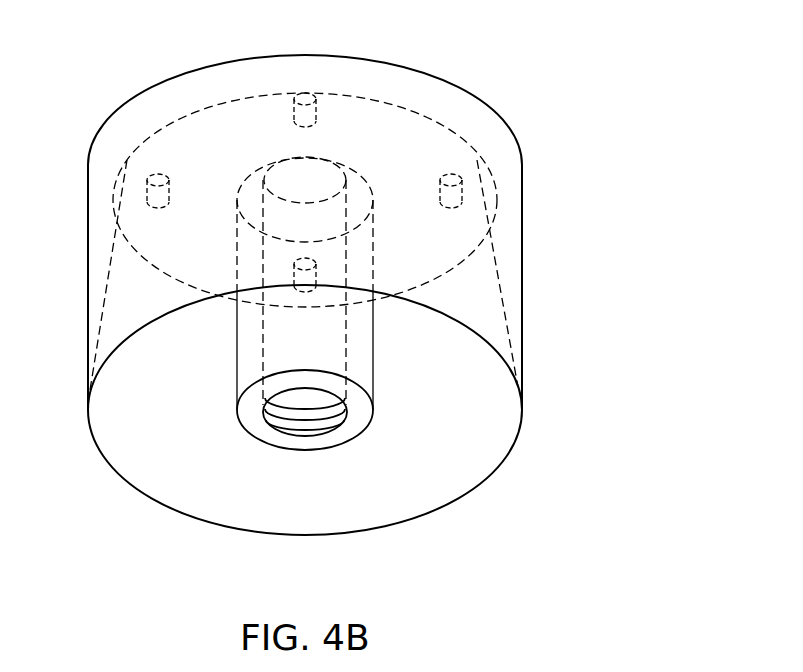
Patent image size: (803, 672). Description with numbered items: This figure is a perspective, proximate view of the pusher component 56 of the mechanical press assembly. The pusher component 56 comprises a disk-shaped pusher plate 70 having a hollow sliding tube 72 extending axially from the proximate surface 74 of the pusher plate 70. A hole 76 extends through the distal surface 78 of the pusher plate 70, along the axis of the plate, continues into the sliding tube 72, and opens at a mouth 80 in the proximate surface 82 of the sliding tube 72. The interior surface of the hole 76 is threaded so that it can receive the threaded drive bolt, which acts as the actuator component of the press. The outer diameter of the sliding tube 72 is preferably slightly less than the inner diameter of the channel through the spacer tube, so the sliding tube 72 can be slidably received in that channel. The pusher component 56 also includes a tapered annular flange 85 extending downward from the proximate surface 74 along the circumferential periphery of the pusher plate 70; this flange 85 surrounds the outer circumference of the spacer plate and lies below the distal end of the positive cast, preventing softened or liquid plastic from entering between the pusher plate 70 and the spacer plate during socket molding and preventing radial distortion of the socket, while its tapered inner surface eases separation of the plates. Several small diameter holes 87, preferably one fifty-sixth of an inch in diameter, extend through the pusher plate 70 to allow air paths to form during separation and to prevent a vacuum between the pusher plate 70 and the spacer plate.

The pusher component 56 is at (634, 127).
The pusher plate 70 is at (127, 162).
The sliding tube 72 is at (235, 360).
The proximate surface 74 is at (505, 262).
The hole 76 is at (347, 340).
The distal surface 78 is at (189, 73).
The mouth 80 is at (326, 422).
The proximate surface of the sliding tube 82 is at (288, 443).
The tapered annular flange 85 is at (517, 232).
The small diameter holes 87 is at (305, 93).